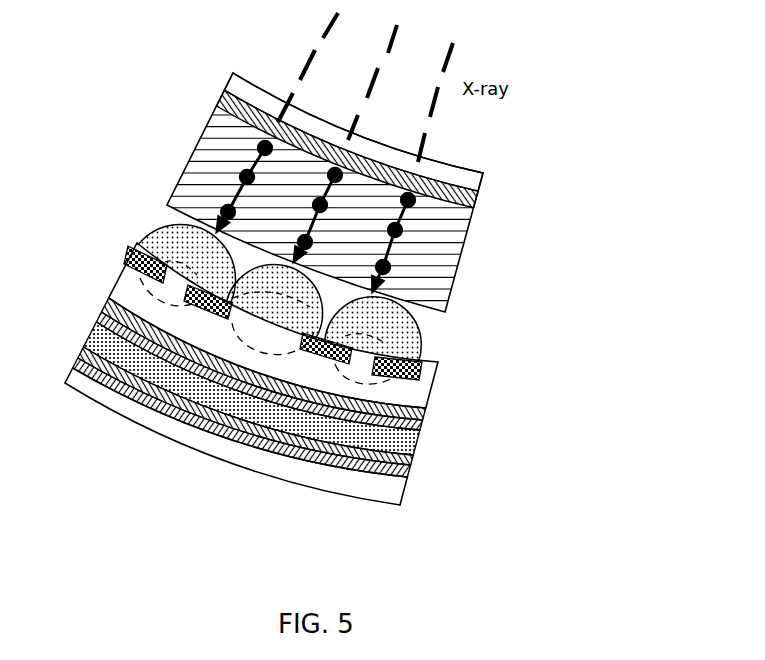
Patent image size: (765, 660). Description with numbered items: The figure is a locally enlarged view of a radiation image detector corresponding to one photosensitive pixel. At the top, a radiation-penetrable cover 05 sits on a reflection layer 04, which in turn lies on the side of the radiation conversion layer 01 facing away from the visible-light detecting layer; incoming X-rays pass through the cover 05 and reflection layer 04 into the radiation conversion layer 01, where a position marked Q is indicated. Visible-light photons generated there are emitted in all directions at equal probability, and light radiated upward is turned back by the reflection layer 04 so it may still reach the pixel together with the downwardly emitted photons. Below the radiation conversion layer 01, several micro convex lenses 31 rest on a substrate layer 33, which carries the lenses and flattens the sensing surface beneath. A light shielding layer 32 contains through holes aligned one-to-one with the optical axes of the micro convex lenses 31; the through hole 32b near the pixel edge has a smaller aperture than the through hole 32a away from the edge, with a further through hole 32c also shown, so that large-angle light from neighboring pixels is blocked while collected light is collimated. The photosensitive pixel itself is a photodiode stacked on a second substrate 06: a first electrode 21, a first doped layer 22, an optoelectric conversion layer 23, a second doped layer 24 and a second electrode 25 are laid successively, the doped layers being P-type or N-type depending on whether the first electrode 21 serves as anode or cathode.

The radiation conversion layer 01 is at (447, 278).
The reflection layer 04 is at (472, 200).
The cover 05 is at (462, 163).
The X-ray interaction point Q is at (242, 186).
The micro convex lens 31 is at (150, 234).
The light shielding layer 32 is at (130, 248).
The through hole 32a is at (245, 350).
The through hole 32b is at (160, 309).
The field region c 32c is at (365, 368).
The substrate layer 33 is at (425, 383).
The second doped layer 24 is at (103, 306).
The second electrode 25 is at (422, 422).
The optoelectric conversion layer 23 is at (422, 448).
The first doped layer 22 is at (82, 345).
The first electrode 21 is at (410, 477).
The second substrate 06 is at (385, 500).